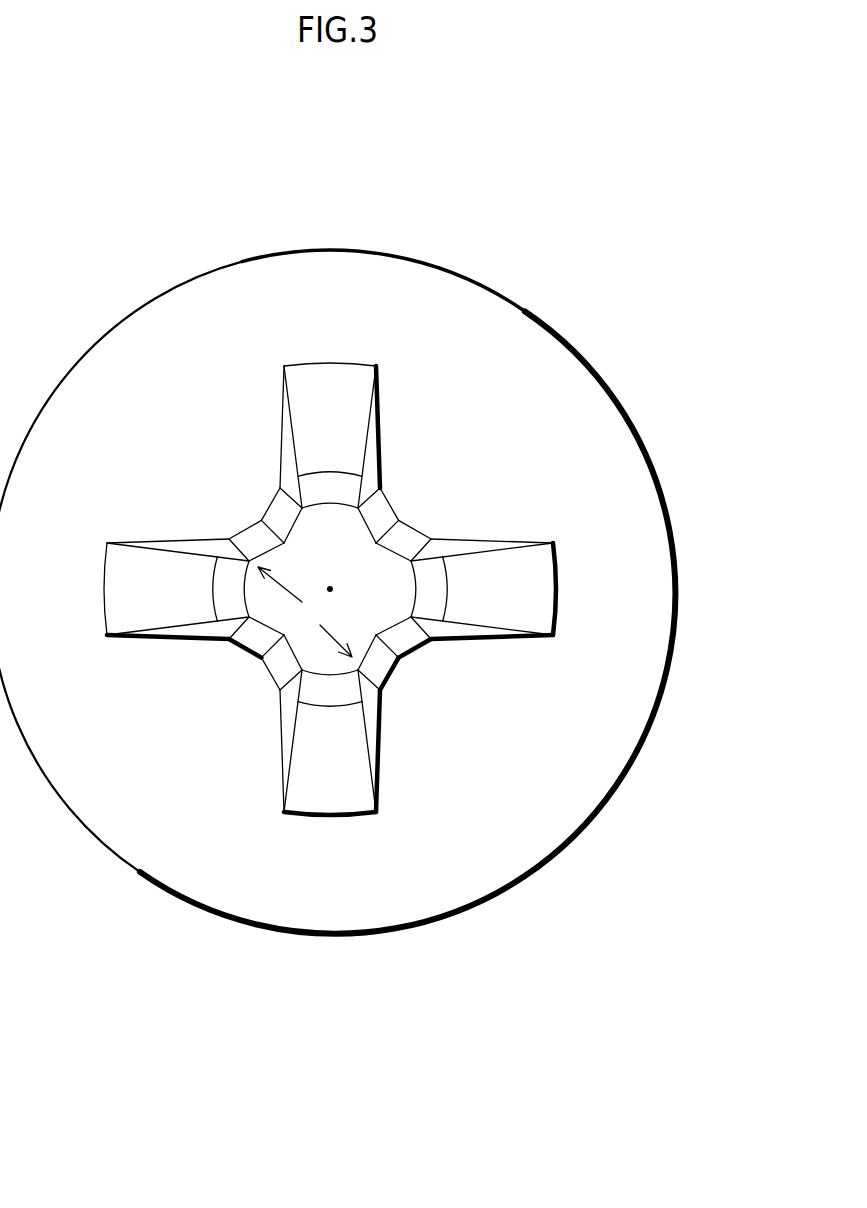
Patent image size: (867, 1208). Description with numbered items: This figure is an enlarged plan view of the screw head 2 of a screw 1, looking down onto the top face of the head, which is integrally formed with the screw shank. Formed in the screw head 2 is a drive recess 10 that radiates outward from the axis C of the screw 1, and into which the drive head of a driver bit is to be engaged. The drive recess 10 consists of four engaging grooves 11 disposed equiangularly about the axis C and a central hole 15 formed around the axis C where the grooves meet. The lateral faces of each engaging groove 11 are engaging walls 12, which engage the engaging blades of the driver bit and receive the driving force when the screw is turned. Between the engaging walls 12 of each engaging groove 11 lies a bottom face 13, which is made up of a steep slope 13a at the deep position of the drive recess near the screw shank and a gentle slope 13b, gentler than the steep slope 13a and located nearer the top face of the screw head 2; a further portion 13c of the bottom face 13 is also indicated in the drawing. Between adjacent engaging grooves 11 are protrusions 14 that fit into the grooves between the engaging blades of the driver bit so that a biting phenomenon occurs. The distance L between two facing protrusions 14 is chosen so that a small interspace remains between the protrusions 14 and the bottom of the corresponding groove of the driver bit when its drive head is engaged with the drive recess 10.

The screw 1 is at (120, 270).
The screw head 2 is at (164, 451).
The drive recess 10 is at (303, 342).
The engaging groove 11 is at (332, 398).
The engaging wall 12 is at (458, 630).
The bottom face 13 is at (300, 877).
The steep slope 13a is at (323, 690).
The gentle slope 13b is at (303, 762).
The bottom surface boundary 13c is at (333, 706).
The protrusion 14 is at (385, 507).
The central hole 15 is at (327, 550).
The distance between facing protrusions L is at (305, 612).
The axis C is at (333, 590).